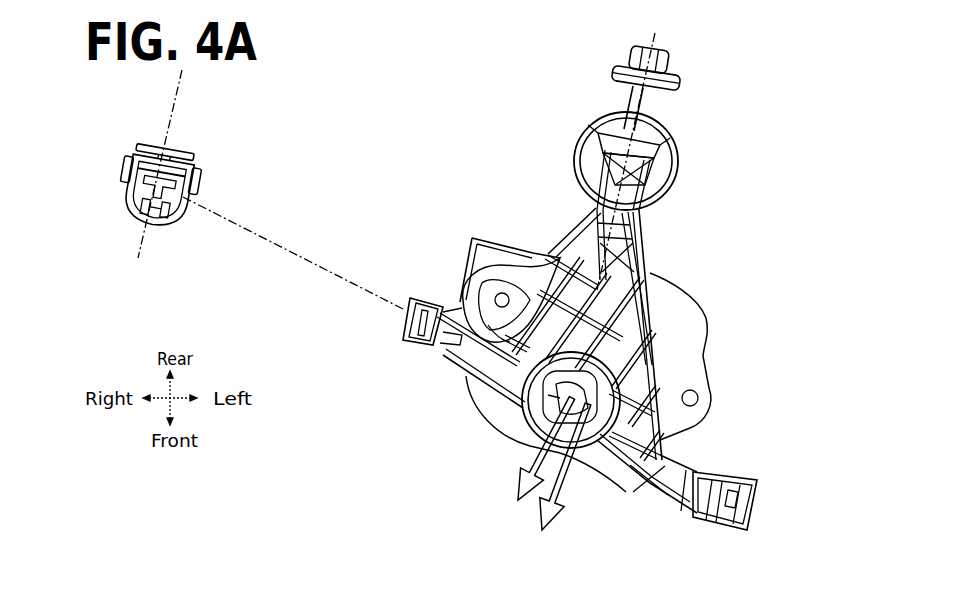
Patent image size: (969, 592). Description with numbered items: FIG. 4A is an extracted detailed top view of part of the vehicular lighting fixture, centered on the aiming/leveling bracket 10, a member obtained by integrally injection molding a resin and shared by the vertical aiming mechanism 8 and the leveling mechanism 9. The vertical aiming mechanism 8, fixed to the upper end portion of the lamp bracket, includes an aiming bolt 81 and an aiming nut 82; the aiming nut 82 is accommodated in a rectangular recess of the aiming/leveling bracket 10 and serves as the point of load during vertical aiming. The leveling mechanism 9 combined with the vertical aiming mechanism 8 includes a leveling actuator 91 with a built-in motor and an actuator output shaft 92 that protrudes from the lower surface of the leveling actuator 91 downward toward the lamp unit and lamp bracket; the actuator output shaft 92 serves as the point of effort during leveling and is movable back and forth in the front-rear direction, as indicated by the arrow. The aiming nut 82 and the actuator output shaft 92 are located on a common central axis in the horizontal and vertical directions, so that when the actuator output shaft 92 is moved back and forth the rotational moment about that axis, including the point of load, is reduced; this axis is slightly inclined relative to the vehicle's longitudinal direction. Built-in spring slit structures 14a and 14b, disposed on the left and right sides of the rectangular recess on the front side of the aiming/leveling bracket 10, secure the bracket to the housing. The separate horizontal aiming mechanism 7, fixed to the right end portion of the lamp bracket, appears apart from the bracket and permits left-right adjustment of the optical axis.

The horizontal aiming mechanism 7 is at (192, 132).
The vertical aiming mechanism 8 is at (698, 133).
The aiming bolt 81 is at (669, 72).
The aiming nut 82 is at (662, 176).
The aiming/leveling bracket 10 is at (578, 384).
The built-in spring slit structure 14a is at (420, 347).
The built-in spring slit structure 14b is at (730, 520).
The leveling mechanism 9 is at (597, 462).
The leveling actuator 91 is at (625, 490).
The actuator output shaft 92 is at (587, 447).